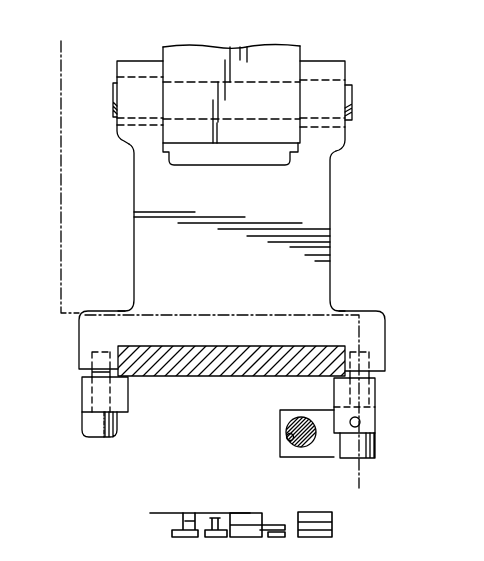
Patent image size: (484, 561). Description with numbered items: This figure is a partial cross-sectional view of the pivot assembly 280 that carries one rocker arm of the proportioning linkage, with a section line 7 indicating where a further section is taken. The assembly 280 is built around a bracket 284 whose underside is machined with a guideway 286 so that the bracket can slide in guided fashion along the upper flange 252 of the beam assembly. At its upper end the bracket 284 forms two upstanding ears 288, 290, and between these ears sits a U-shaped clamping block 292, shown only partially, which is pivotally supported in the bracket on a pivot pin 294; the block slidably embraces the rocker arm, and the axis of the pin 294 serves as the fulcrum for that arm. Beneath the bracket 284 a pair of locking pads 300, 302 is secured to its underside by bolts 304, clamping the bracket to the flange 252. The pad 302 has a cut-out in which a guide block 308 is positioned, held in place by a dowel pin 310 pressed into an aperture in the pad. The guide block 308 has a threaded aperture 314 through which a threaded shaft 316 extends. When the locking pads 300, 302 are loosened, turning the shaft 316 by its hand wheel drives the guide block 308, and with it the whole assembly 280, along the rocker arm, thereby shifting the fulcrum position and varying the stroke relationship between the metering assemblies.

The section line 7- 7 is at (56, 41).
The pivot assembly 280 is at (338, 217).
The bracket 284 is at (147, 253).
The guideway 286 is at (248, 350).
The upstanding ear 288 is at (129, 133).
The upstanding ear 290 is at (330, 137).
The clamping block 292 is at (285, 62).
The pivot pin 294 is at (352, 103).
The upper flange 252 is at (197, 365).
The locking pad 300 is at (120, 397).
The locking pad 302 is at (376, 397).
The bolt 304 is at (100, 425).
The guide block 308 is at (322, 443).
The dowel pin 310 is at (361, 422).
The threaded aperture 314 is at (284, 442).
The threaded shaft 316 is at (295, 447).